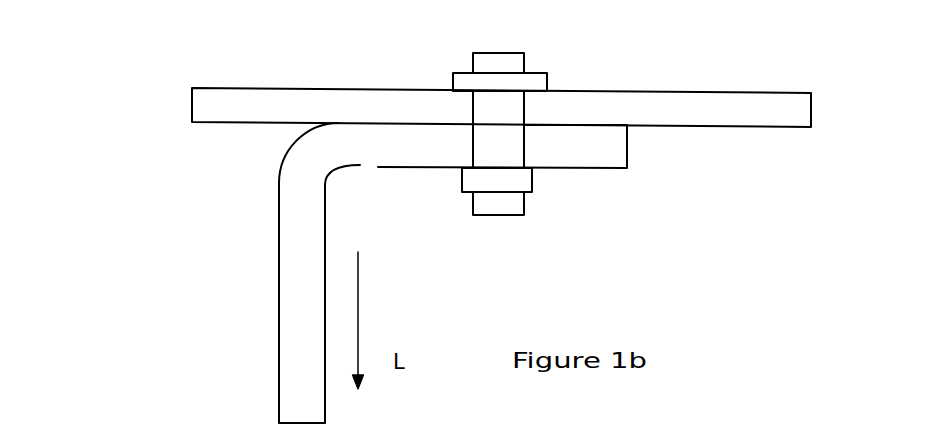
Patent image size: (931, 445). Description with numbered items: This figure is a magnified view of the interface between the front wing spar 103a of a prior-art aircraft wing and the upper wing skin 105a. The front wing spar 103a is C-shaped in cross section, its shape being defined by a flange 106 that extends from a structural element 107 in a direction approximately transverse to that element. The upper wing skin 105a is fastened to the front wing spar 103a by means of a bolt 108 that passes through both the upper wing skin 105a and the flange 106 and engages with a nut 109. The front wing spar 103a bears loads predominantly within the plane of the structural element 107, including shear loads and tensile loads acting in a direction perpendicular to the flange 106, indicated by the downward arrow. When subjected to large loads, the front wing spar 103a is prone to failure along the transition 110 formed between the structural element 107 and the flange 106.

The upper wing skin 105a is at (191, 104).
The flange 106 is at (612, 142).
The bolt 108 is at (526, 63).
The nut 109 is at (535, 184).
The structural element 107 is at (300, 240).
The front wing spar 103a is at (279, 305).
The transition 110 is at (334, 175).